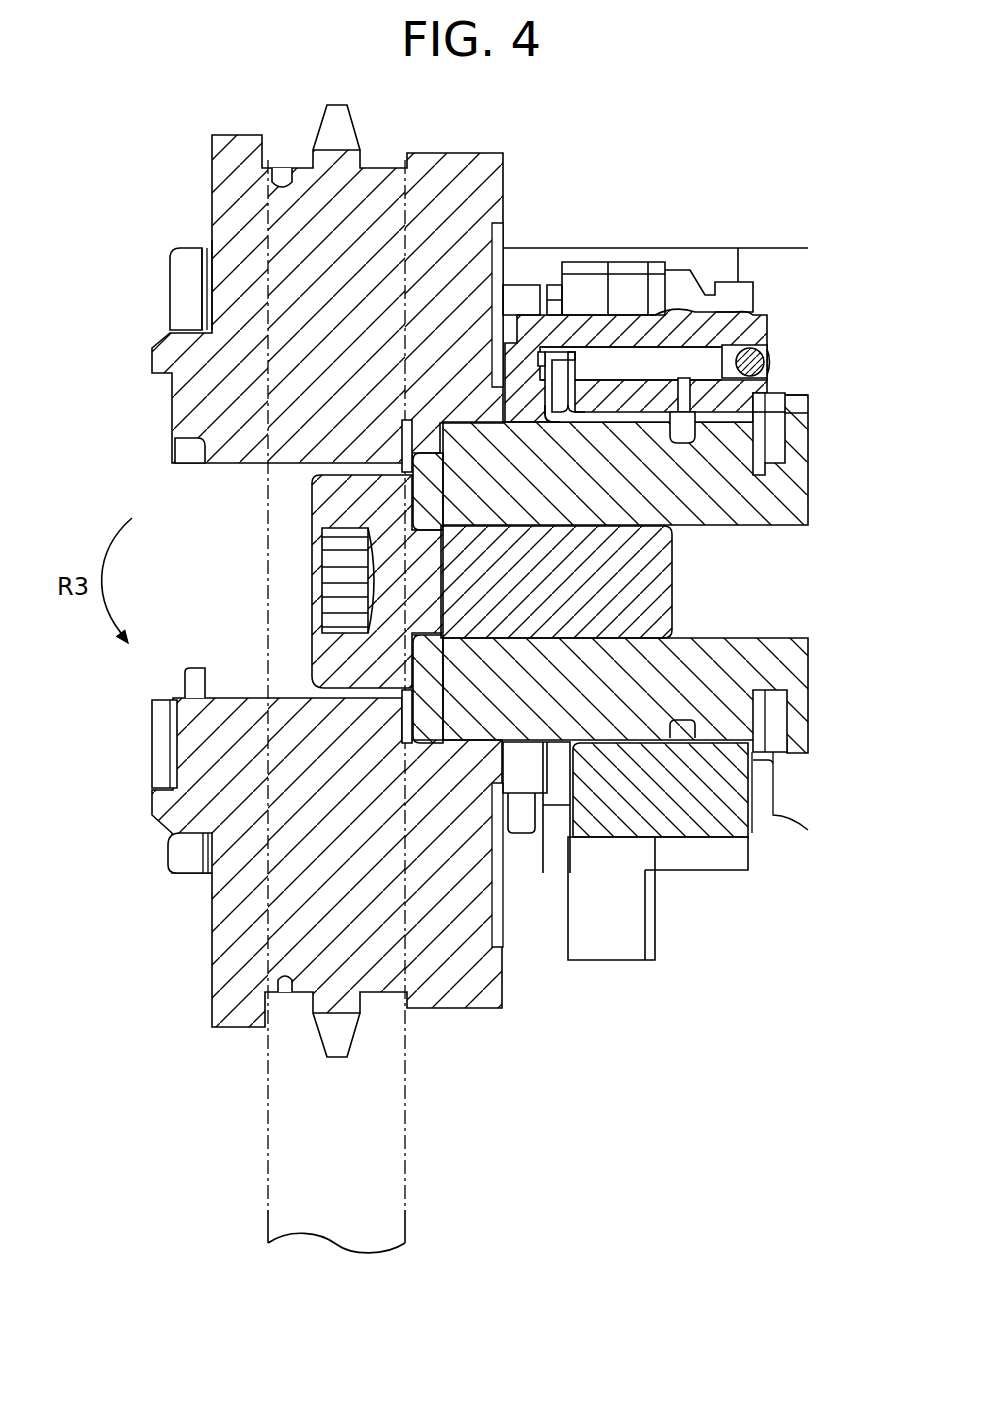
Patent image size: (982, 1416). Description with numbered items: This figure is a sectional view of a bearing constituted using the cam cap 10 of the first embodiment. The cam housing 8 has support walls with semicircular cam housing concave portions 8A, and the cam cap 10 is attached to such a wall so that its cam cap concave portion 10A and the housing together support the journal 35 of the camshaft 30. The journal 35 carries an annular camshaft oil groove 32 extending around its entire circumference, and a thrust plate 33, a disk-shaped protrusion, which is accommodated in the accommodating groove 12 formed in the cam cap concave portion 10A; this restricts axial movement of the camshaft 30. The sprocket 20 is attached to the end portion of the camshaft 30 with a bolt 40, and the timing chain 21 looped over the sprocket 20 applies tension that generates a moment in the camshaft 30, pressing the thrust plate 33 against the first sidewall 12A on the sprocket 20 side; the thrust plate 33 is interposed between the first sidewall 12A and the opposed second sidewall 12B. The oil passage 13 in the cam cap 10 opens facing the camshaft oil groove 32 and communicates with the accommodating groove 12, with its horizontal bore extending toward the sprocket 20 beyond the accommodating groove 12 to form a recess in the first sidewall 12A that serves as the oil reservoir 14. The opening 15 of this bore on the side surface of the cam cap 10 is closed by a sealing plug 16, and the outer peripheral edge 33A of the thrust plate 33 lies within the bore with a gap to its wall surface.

The cam housing 8 is at (695, 835).
The cam housing concave portion 8A is at (770, 735).
The cam cap 10 is at (680, 317).
The cam cap concave portion 10A is at (755, 440).
The accommodating groove 12 is at (552, 355).
The first sidewall 12A is at (550, 420).
The second sidewall 12B is at (575, 420).
The oil passage 13 is at (676, 376).
The oil reservoir 14 is at (540, 355).
The opening 15 is at (770, 352).
The sealing plug 16 is at (762, 365).
The sprocket 20 is at (218, 193).
The timing chain 21 is at (268, 1140).
The camshaft 30 is at (790, 660).
The camshaft oil groove 32 is at (692, 438).
The thrust plate 33 is at (571, 393).
The outer peripheral edge 33A is at (578, 362).
The journal 35 is at (742, 418).
The bolt 40 is at (310, 498).